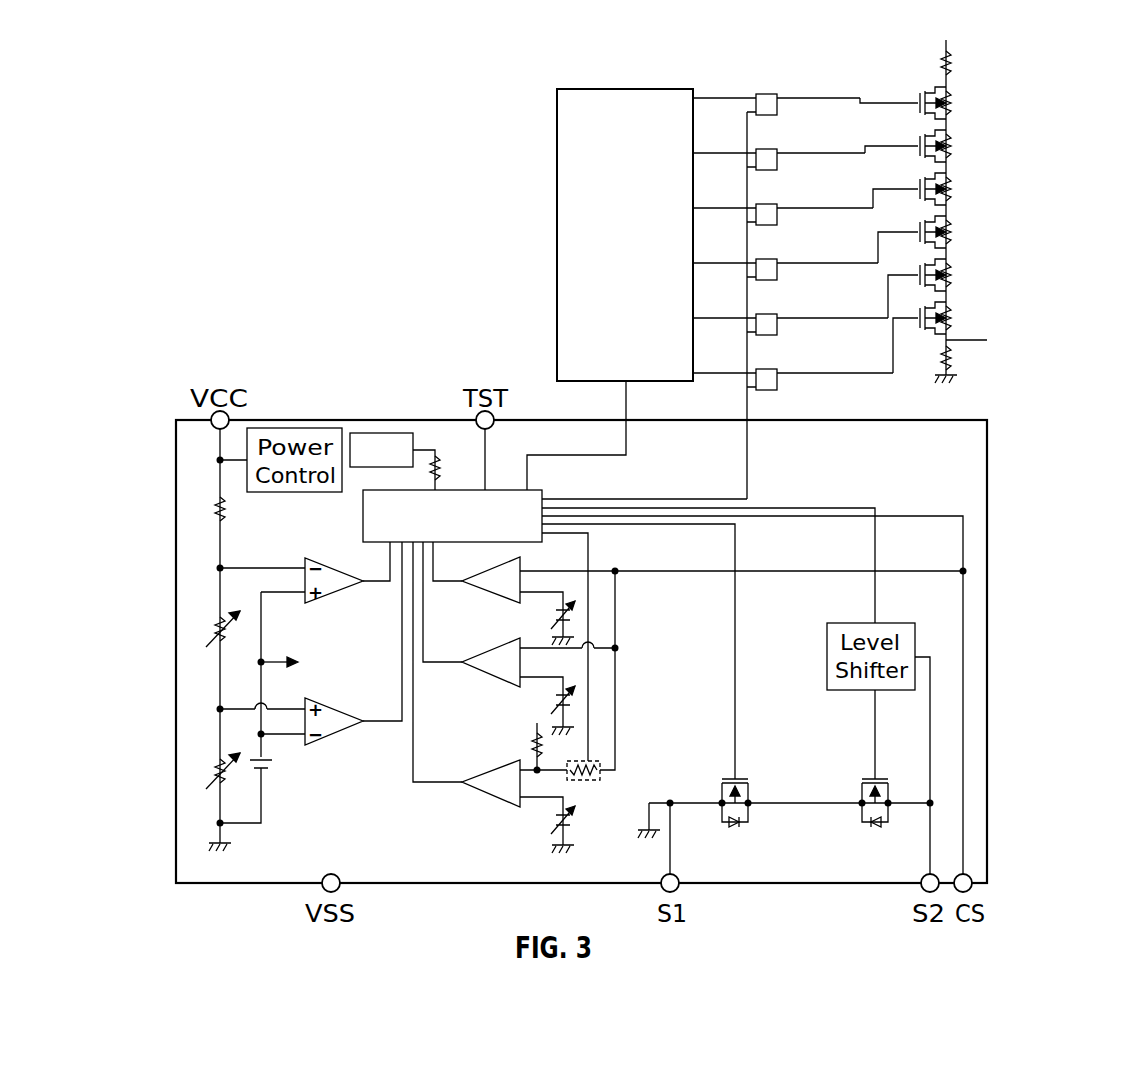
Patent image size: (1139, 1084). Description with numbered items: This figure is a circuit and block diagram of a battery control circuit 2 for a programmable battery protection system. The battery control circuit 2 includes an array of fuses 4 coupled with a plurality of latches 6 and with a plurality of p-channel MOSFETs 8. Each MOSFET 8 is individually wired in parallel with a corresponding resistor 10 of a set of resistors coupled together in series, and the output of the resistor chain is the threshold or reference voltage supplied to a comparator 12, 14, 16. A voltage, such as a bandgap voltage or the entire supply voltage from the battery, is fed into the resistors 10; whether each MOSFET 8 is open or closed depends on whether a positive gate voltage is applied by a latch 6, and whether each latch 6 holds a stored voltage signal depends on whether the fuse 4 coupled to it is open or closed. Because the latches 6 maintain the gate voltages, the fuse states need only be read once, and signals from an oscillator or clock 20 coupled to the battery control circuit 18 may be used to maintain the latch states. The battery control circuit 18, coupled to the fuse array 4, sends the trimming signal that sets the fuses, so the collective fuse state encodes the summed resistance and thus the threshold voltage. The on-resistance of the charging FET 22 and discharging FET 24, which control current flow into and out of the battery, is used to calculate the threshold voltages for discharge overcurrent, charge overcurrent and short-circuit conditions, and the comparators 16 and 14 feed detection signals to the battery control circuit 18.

The battery control circuit 2 is at (344, 196).
The array of fuses 4 is at (557, 215).
The latches 6 is at (766, 94).
The p-channel MOSFETs 8 is at (918, 100).
The resistors 10 is at (950, 107).
The comparator 12 is at (490, 598).
The comparator 14 is at (490, 678).
The comparator 16 is at (490, 797).
The battery control circuit 18 is at (445, 490).
The oscillator or clock 20 is at (373, 433).
The charging FET 22 is at (888, 797).
The discharging FET 24 is at (722, 795).